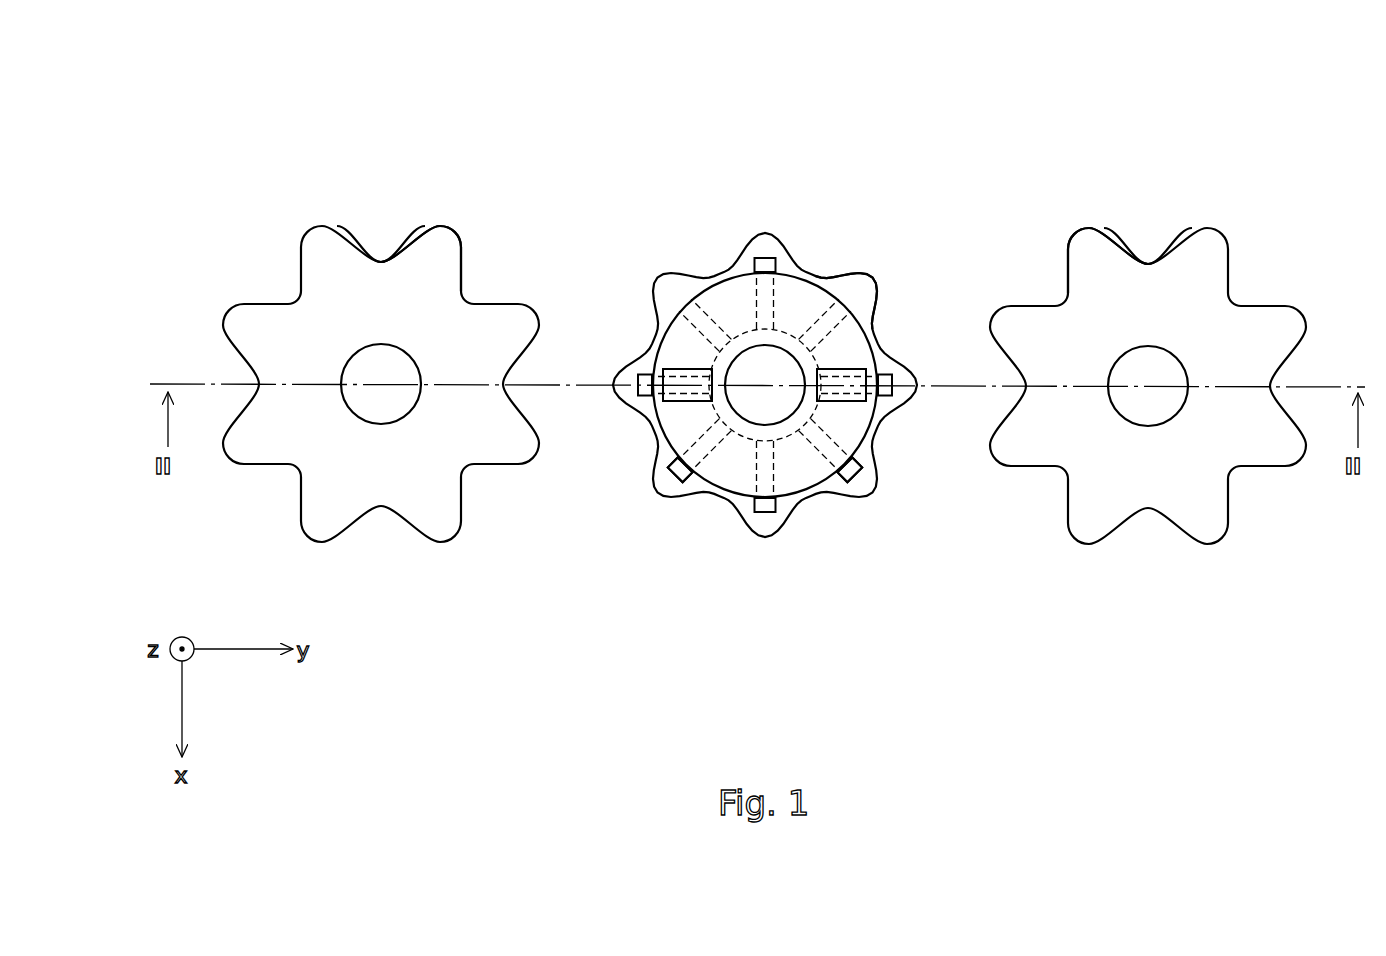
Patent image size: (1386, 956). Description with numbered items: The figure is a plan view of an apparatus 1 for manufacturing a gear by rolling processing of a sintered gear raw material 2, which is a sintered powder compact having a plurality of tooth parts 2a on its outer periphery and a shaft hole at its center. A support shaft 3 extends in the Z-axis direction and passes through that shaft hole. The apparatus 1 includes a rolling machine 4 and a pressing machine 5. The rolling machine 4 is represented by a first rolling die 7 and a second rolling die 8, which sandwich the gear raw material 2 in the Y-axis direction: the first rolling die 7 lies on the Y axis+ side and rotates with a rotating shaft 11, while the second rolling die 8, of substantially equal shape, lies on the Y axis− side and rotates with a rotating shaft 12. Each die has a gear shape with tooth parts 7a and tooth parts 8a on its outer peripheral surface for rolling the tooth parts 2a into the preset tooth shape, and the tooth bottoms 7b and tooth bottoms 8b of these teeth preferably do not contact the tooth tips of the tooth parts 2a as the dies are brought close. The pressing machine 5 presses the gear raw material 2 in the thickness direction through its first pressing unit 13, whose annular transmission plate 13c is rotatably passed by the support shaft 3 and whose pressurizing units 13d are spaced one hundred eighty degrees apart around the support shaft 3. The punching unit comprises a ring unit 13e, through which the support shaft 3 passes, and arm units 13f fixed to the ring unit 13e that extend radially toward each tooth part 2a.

The apparatus for manufacturing a gear 1 is at (1237, 74).
The gear raw material 2 is at (790, 245).
The tooth parts 2a is at (868, 280).
The support shaft 3 is at (748, 424).
The rolling machine 4 is at (761, 378).
The pressing machine 5 is at (781, 413).
The first rolling die 7 is at (1250, 290).
The tooth parts 7a is at (1087, 248).
The tooth bottoms 7b is at (1148, 263).
The second rolling die 8 is at (257, 272).
The tooth parts 8a is at (438, 240).
The tooth bottoms 8b is at (381, 261).
The rotating shaft 11 is at (1146, 412).
The rotating shaft 12 is at (377, 406).
The first pressing unit 13 is at (879, 335).
The transmission plate 13c is at (812, 477).
The pressurizing units 13d is at (670, 389).
The ring unit 13e is at (820, 402).
The arm units 13f is at (673, 477).